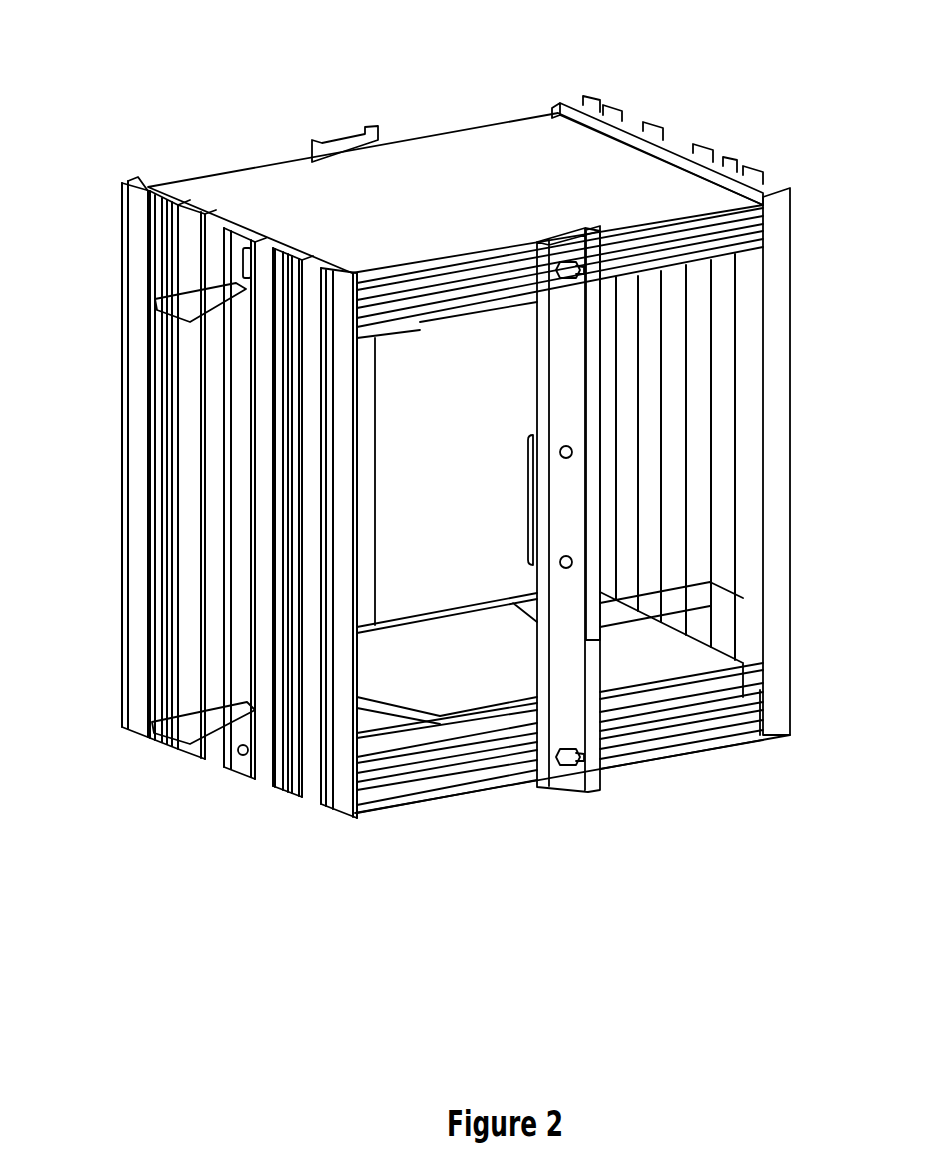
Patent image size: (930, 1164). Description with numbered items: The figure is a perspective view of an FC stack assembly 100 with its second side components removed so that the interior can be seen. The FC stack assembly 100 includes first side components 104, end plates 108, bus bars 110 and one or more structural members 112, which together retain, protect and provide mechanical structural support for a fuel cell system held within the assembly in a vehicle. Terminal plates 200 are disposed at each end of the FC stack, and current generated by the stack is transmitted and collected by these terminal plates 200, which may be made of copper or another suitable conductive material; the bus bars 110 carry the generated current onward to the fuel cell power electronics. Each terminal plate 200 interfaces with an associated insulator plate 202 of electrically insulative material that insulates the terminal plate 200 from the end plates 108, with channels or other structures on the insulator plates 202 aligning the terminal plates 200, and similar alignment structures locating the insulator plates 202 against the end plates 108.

The FC stack assembly 100 is at (215, 112).
The first side components 104 is at (692, 152).
The end plates 108 is at (423, 167).
The bus bars 110 is at (200, 300).
The structural members 112 is at (588, 787).
The terminal plates 200 is at (618, 265).
The insulator plates 202 is at (403, 323).